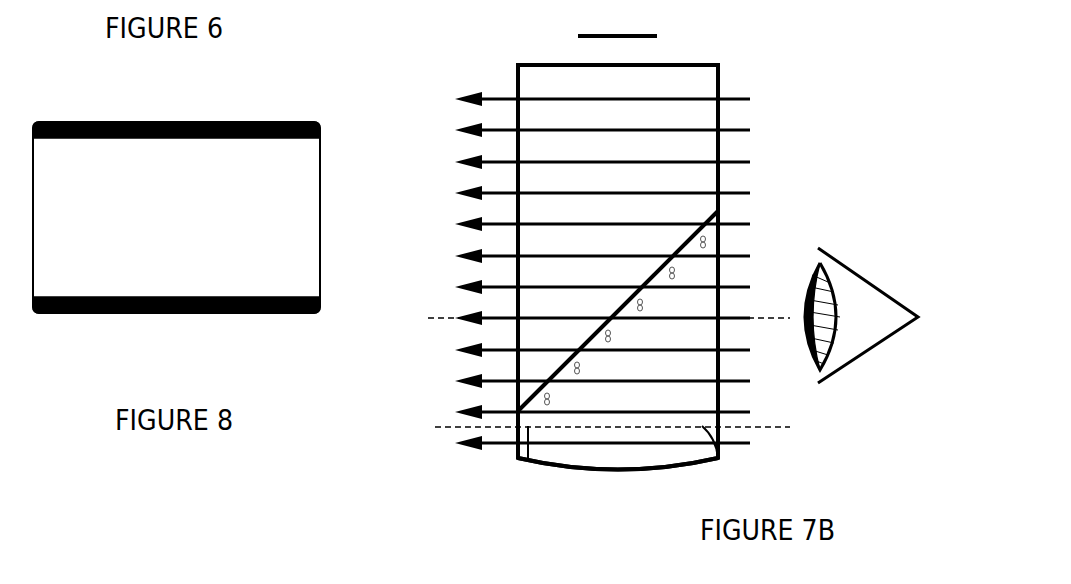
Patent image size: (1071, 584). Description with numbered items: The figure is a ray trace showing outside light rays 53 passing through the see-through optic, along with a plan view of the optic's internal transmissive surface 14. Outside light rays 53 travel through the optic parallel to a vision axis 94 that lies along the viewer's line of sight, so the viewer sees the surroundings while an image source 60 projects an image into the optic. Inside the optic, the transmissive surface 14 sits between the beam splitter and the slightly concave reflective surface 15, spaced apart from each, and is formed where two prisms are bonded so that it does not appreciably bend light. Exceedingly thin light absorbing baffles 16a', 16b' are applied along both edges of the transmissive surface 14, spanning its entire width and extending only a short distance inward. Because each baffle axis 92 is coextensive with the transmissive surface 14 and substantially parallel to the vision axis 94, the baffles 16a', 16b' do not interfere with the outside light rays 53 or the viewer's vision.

In FIG. 7B, the transmissive surface 14 is at (577, 440).
In FIG. 7B, the reflective surface 15 is at (612, 470).
In FIG. 8, the light absorbing baffle 16a' is at (176, 330).
In FIG. 7B, the light absorbing baffle 16a' is at (495, 465).
In FIG. 8, the light absorbing baffle 16b' is at (180, 105).
In FIG. 7B, the light absorbing baffle 16b' is at (739, 456).
In FIG. 7B, the outside light rays 53 is at (730, 130).
In FIG. 7B, the image source 60 is at (608, 33).
In FIG. 7B, the baffle axis 92 is at (449, 427).
In FIG. 7B, the vision axis 94 is at (441, 318).